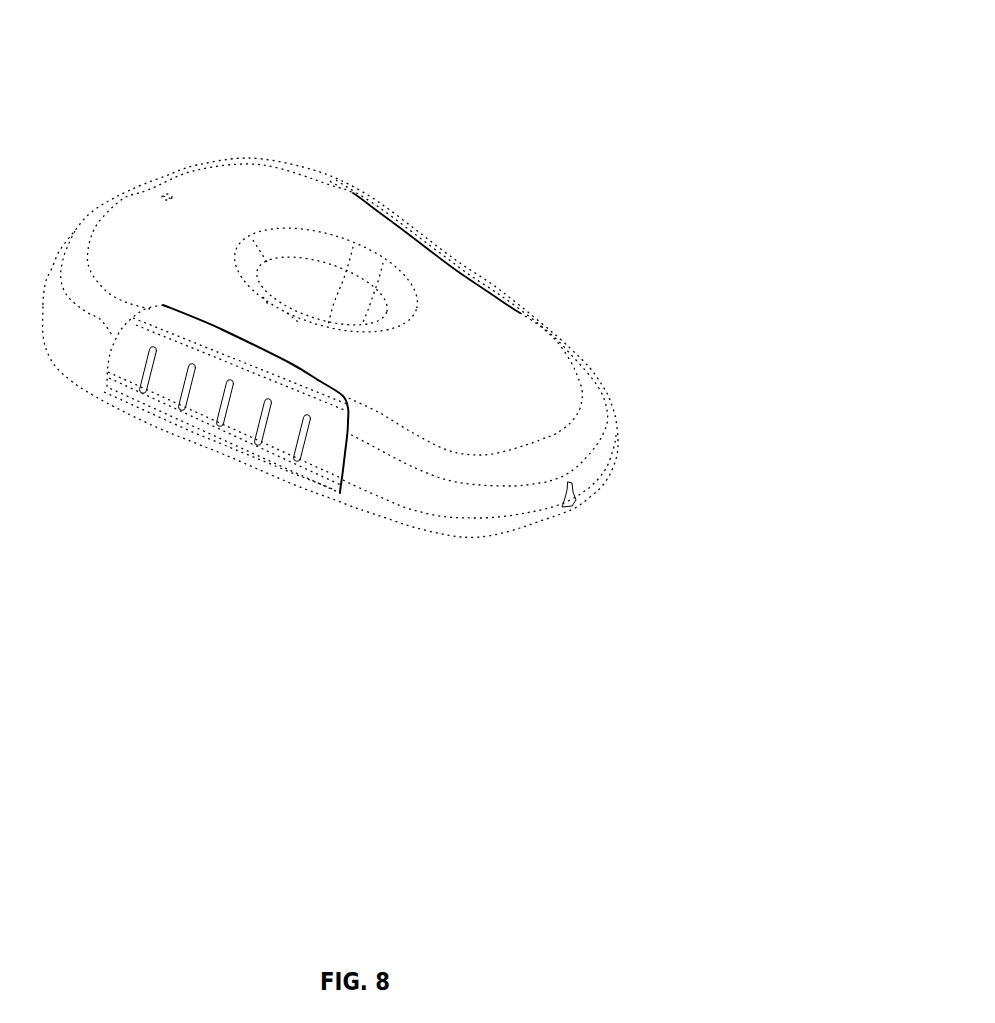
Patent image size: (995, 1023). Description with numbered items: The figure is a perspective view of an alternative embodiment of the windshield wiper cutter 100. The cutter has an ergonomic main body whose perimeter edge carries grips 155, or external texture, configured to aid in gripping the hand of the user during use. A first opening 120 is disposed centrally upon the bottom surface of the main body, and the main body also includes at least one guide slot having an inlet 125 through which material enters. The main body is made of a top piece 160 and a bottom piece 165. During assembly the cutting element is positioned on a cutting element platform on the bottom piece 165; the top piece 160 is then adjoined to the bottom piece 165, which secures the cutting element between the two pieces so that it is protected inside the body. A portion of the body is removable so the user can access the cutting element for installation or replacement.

The windshield wiper cutter 100 is at (410, 323).
The first opening 120 is at (427, 300).
The inlet 125 is at (572, 507).
The grips 155 is at (208, 440).
The top piece 160 is at (527, 390).
The bottom piece 165 is at (612, 465).